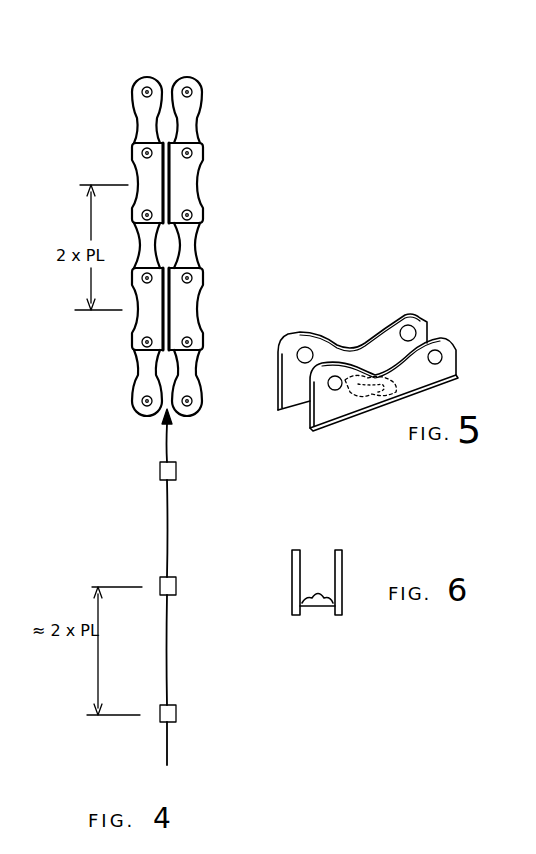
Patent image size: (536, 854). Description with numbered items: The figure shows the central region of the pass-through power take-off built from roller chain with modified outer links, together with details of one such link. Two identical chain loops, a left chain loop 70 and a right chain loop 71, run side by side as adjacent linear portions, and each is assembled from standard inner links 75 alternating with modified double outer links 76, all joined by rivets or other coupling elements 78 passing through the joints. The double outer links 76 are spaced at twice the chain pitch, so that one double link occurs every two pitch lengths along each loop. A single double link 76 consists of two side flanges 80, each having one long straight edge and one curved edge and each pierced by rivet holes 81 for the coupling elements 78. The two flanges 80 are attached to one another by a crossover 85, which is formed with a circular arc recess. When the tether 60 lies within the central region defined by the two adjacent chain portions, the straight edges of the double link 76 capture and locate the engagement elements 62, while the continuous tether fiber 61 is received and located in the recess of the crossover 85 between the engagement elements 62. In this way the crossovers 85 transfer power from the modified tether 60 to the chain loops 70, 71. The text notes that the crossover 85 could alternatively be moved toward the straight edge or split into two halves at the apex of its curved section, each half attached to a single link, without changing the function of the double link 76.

In FIG. 4, the tether 60 is at (125, 524).
In FIG. 4, the continuous tether fiber 61 is at (172, 530).
In FIG. 4, the engagement elements 62 is at (159, 470).
In FIG. 4, the left chain loop 70 is at (120, 68).
In FIG. 4, the right chain loop 71 is at (202, 62).
In FIG. 4, the standard inner links 75 is at (138, 115).
In FIG. 4, the modified double outer links 76 is at (130, 170).
In FIG. 5, the modified double outer links 76 is at (378, 358).
In FIG. 6, the modified double outer links 76 is at (335, 597).
In FIG. 4, the rivets or other coupling elements 78 is at (194, 152).
In FIG. 5, the side flanges 80 is at (378, 347).
In FIG. 6, the side flanges 80 is at (288, 580).
In FIG. 5, the rivet holes 81 is at (412, 330).
In FIG. 5, the crossover 85 is at (356, 397).
In FIG. 6, the crossover 85 is at (315, 612).